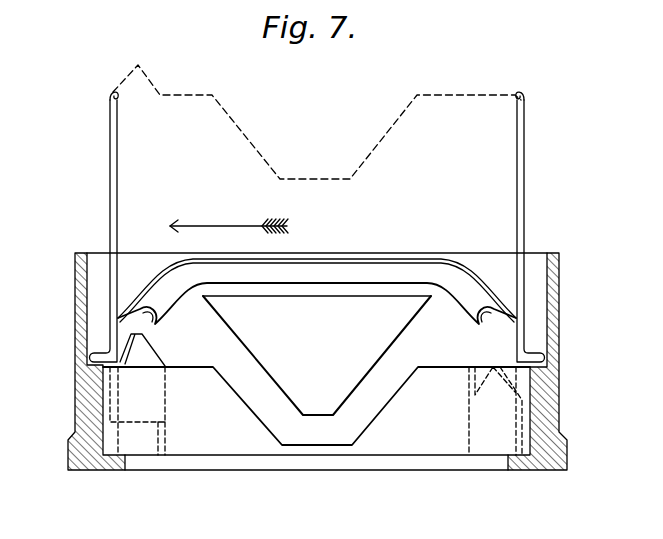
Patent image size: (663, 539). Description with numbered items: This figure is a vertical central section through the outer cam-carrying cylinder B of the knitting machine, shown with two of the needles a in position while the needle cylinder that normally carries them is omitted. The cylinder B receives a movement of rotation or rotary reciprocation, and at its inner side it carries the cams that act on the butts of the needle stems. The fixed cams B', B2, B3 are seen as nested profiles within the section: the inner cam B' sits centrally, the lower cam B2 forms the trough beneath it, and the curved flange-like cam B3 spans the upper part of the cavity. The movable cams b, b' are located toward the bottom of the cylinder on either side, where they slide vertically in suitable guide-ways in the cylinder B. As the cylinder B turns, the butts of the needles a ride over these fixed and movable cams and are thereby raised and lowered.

The needles a is at (317, 227).
The cam-carrying cylinder B is at (313, 361).
The fixed cam B2 is at (235, 390).
The fixed cam B' is at (317, 355).
The fixed cam B3 is at (317, 291).
The movable cam b is at (142, 350).
The movable cam b' is at (494, 396).